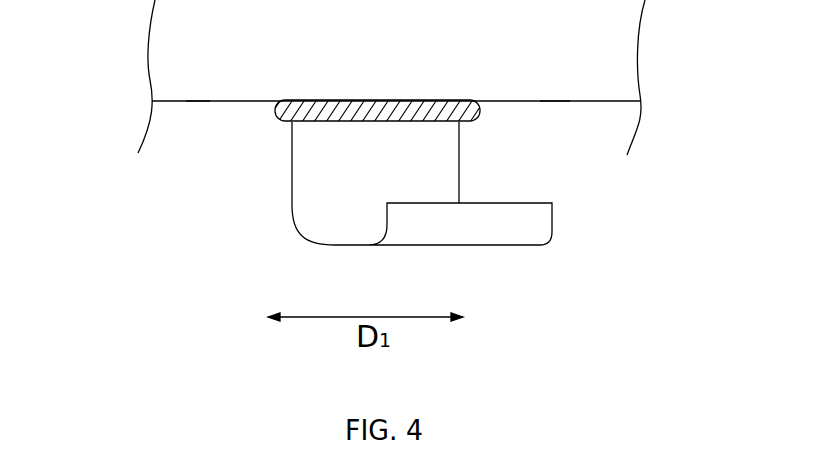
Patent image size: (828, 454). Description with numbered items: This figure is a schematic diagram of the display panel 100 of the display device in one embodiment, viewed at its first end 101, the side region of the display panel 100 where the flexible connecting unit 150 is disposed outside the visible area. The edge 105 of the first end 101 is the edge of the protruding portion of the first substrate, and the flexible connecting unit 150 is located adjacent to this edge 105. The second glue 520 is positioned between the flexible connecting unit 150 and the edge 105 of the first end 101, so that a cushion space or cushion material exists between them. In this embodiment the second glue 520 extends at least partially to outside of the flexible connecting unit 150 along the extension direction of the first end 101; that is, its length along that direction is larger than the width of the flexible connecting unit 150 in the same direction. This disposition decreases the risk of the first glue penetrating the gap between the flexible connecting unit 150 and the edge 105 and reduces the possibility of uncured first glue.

The display panel 100 is at (570, 75).
The first end 101 is at (553, 123).
The edge 105 is at (198, 101).
The second glue 520 is at (283, 114).
The flexible connecting unit 150 is at (315, 190).